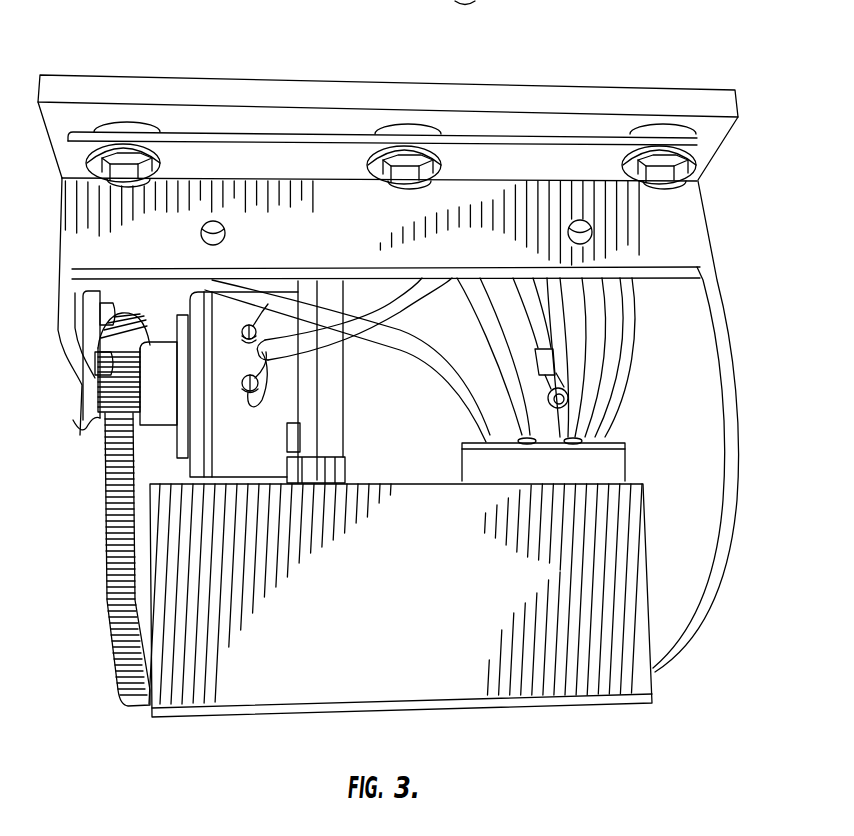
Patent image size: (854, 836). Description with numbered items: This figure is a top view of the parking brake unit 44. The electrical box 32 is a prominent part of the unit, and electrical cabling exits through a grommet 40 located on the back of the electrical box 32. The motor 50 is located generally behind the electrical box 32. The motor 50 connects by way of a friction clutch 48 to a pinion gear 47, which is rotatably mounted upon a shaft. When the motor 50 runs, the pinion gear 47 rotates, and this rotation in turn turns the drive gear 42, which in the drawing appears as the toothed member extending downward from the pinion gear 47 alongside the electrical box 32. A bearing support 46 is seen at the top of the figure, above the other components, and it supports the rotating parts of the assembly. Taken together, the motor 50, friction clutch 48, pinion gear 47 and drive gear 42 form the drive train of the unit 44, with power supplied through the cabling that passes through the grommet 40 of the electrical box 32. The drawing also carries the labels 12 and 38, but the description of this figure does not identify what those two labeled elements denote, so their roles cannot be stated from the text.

The unit 44 is at (37, 50).
The vehicle 12 is at (540, 1).
The bearing support 46 is at (230, 97).
The side plates 38 is at (90, 245).
The grommet 40 is at (608, 462).
The pinion gear 47 is at (120, 392).
The friction clutch 48 is at (160, 417).
The drive gear 42 is at (113, 523).
The motor 50 is at (230, 432).
The electrical box 32 is at (447, 653).